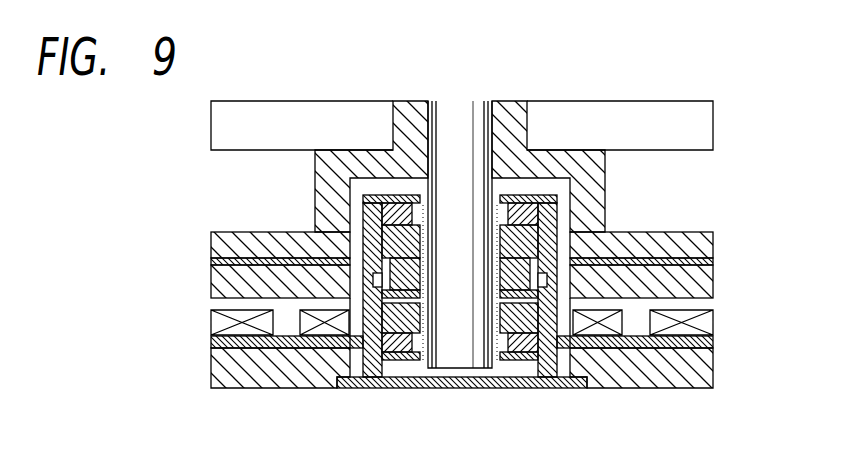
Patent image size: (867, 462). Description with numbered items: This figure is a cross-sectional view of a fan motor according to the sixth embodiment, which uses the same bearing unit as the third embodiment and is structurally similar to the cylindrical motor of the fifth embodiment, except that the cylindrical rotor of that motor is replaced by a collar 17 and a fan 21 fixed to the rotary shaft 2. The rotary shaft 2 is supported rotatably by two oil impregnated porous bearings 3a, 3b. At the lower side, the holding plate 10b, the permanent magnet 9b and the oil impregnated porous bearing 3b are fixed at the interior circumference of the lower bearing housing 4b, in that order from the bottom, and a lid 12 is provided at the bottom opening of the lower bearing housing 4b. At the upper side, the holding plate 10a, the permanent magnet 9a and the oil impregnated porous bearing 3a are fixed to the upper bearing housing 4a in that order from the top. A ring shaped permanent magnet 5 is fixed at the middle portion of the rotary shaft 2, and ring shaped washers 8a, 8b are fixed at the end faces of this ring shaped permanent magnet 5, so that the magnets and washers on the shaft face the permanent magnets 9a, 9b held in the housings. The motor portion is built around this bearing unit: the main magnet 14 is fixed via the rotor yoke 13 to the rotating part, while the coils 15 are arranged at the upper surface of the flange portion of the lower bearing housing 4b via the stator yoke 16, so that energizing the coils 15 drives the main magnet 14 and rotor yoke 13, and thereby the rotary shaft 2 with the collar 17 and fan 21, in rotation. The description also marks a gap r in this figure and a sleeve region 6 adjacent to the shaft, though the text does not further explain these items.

The rotary shaft 2 is at (455, 125).
The oil impregnated porous bearing 3a is at (552, 223).
The oil impregnated porous bearing 3b is at (403, 363).
The upper bearing housing 4a is at (370, 228).
The lower bearing housing 4b is at (560, 363).
The ring shaped permanent magnet 5 is at (372, 283).
The bearing sleeve 6 is at (473, 200).
The ring shaped washer 8a is at (535, 268).
The ring shaped washer 8b is at (566, 370).
The permanent magnet 9a is at (390, 203).
The permanent magnet 9b is at (386, 338).
The holding plate 10a is at (403, 225).
The holding plate 10b is at (506, 355).
The lid 12 is at (457, 388).
The rotor yoke 13 is at (212, 257).
The main magnet 14 is at (215, 285).
The coils 15 is at (215, 325).
The stator yoke 16 is at (215, 342).
The collar 17 is at (328, 175).
The fan 21 is at (622, 113).
The gap r is at (550, 279).